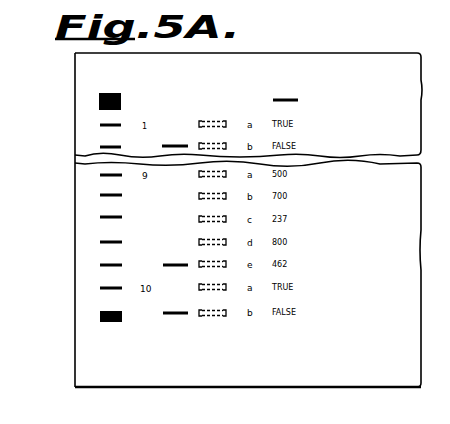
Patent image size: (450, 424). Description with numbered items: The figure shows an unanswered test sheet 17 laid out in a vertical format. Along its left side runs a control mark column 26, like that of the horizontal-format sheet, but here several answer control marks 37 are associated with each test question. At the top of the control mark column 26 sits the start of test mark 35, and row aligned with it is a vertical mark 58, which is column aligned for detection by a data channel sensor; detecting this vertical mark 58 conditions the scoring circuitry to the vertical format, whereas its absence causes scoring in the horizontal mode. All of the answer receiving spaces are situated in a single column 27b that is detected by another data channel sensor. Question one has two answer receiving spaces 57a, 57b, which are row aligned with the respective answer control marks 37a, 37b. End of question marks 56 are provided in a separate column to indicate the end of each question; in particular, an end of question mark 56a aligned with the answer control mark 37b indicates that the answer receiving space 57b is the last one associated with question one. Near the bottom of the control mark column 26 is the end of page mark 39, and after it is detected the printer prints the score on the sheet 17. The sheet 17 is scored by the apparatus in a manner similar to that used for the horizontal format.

The test sheet 17 is at (363, 44).
The start of test mark 35 is at (99, 97).
The answer control mark 37a is at (100, 125).
The answer control mark 37b is at (100, 147).
The answer control marks 37 is at (100, 195).
The end of page mark 39 is at (100, 314).
The control mark column 26 is at (103, 322).
The end of question mark 56a is at (178, 145).
The end of question marks 56 is at (175, 264).
The answer receiving space 57a is at (213, 121).
The answer receiving space 57b is at (224, 145).
The vertical mark 58 is at (298, 100).
The column 27b is at (216, 321).